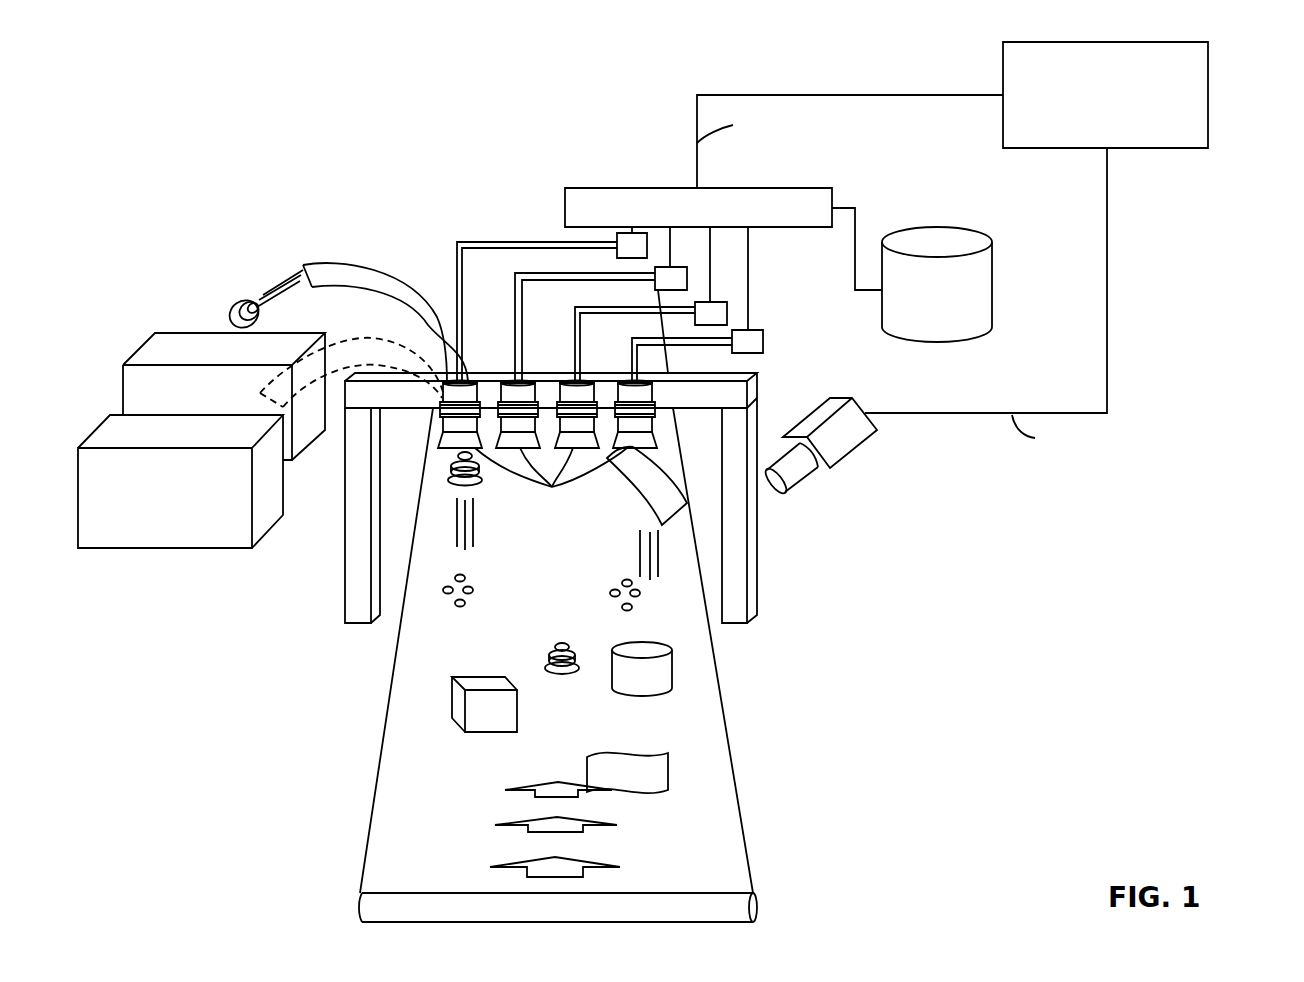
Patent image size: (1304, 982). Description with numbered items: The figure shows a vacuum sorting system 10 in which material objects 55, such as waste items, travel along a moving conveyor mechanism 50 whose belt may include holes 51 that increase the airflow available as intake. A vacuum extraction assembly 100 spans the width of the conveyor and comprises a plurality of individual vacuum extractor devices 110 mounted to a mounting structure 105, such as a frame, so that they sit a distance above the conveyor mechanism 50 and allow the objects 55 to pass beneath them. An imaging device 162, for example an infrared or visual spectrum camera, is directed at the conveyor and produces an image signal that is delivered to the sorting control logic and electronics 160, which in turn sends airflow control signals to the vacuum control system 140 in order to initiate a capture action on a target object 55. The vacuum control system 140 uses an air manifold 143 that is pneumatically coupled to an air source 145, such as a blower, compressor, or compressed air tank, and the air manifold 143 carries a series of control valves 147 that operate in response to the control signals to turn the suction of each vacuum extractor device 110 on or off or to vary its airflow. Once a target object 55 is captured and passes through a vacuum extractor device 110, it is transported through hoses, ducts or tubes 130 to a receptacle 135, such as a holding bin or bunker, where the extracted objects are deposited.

The vacuum sorting system 10 is at (255, 66).
The conveyor mechanism 50 is at (723, 695).
The holes 51 is at (438, 604).
The material objects 55 is at (250, 298).
The vacuum extraction assembly 100 is at (418, 427).
The mounting structure 105 is at (343, 589).
The vacuum extractor devices 110 is at (547, 451).
The hoses, ducts or tubes 130 is at (323, 270).
The receptacle 135 is at (225, 402).
The vacuum control system 140 is at (746, 65).
The air manifold 143 is at (632, 188).
The air source 145 is at (993, 290).
The control valves 147 is at (647, 245).
The sorting control logic and electronics 160 is at (1208, 92).
The imaging device 162 is at (857, 448).